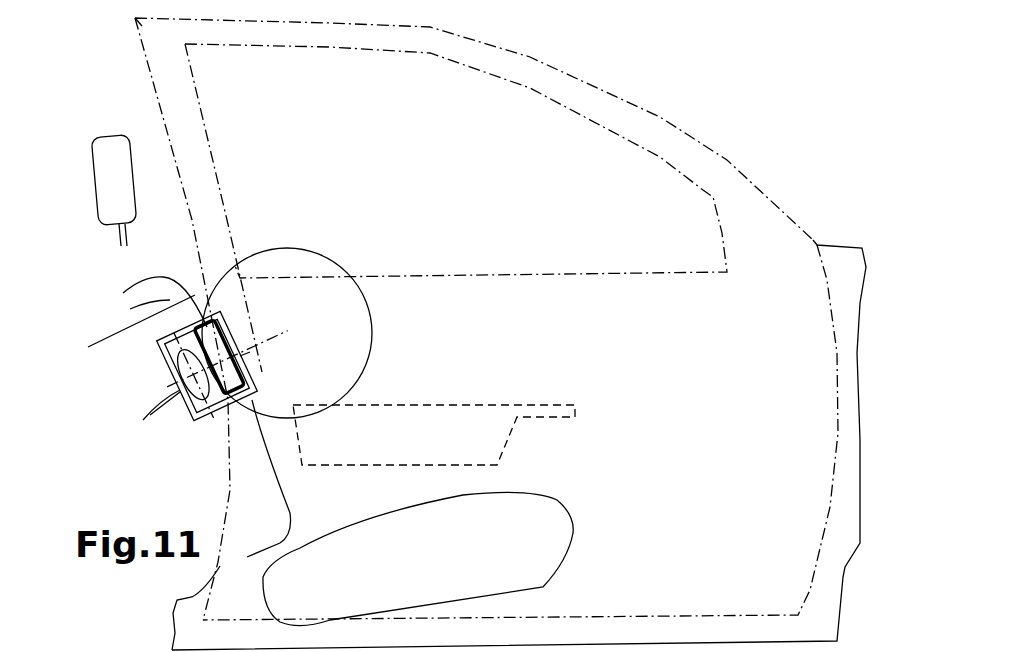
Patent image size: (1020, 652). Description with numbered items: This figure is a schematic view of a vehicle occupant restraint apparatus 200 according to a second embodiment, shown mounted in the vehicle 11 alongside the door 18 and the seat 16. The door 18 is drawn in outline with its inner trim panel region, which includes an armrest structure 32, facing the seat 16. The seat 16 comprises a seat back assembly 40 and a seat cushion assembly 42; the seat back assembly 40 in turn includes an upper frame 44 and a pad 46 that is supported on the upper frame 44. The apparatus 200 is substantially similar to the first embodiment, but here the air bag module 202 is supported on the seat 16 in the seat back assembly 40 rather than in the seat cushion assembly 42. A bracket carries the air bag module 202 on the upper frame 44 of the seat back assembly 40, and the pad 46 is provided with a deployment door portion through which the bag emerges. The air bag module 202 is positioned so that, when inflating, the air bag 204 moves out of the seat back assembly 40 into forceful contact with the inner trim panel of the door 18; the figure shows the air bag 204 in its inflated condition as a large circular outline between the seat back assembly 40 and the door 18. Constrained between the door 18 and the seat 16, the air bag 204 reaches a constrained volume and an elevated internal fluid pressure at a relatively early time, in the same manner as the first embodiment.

The vehicle 11 is at (680, 124).
The seat 16 is at (84, 253).
The door 18 is at (215, 487).
The armrest structure 32 is at (545, 405).
The seat back assembly 40 is at (118, 303).
The seat cushion assembly 42 is at (547, 513).
The upper frame 44 is at (152, 306).
The pad 46 is at (122, 326).
The vehicle occupant restraint apparatus 200 is at (405, 358).
The air bag module 202 is at (179, 382).
The air bag 204 is at (266, 260).